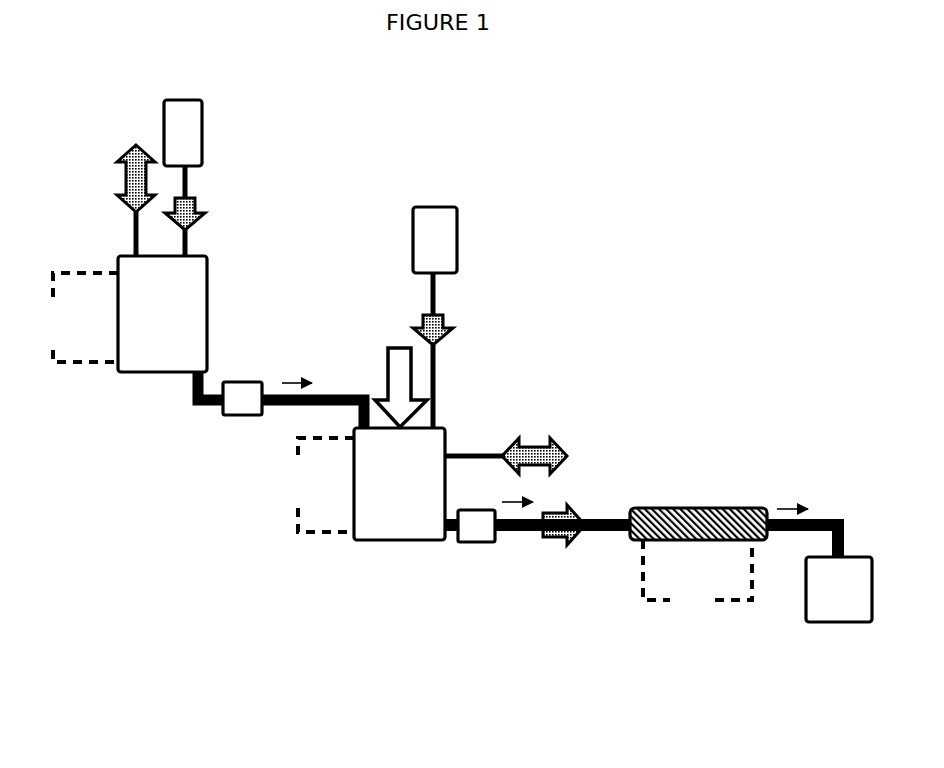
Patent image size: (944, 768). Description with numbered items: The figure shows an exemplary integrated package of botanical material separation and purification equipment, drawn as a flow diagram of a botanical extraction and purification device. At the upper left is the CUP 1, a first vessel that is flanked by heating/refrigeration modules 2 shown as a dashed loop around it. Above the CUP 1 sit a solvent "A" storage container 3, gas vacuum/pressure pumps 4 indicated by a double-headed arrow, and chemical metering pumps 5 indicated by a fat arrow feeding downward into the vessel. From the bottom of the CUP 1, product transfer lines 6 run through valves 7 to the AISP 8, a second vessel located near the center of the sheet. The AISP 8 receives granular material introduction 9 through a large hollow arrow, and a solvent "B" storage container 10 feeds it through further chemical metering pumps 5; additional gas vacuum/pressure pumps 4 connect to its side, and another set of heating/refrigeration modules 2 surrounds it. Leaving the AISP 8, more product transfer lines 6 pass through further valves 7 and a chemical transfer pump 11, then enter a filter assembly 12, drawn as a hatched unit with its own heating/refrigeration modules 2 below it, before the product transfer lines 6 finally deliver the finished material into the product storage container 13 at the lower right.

The CUP 1 is at (162, 314).
The heating/refrigeration modules 2 is at (389, 446).
The solvent "A" storage container 3 is at (183, 149).
The gas vacuum/pressure pumps 4 is at (126, 177).
The chemical metering pumps 5 is at (199, 207).
The product transfer lines 6 is at (194, 406).
The valves 7 is at (239, 414).
The AISP 8 is at (399, 484).
The granular material introduction 9 is at (387, 368).
The solvent "B" storage container 10 is at (435, 261).
The chemical transfer pump 11 is at (553, 546).
The filter assembly 12 is at (696, 506).
The product storage container 13 is at (839, 589).